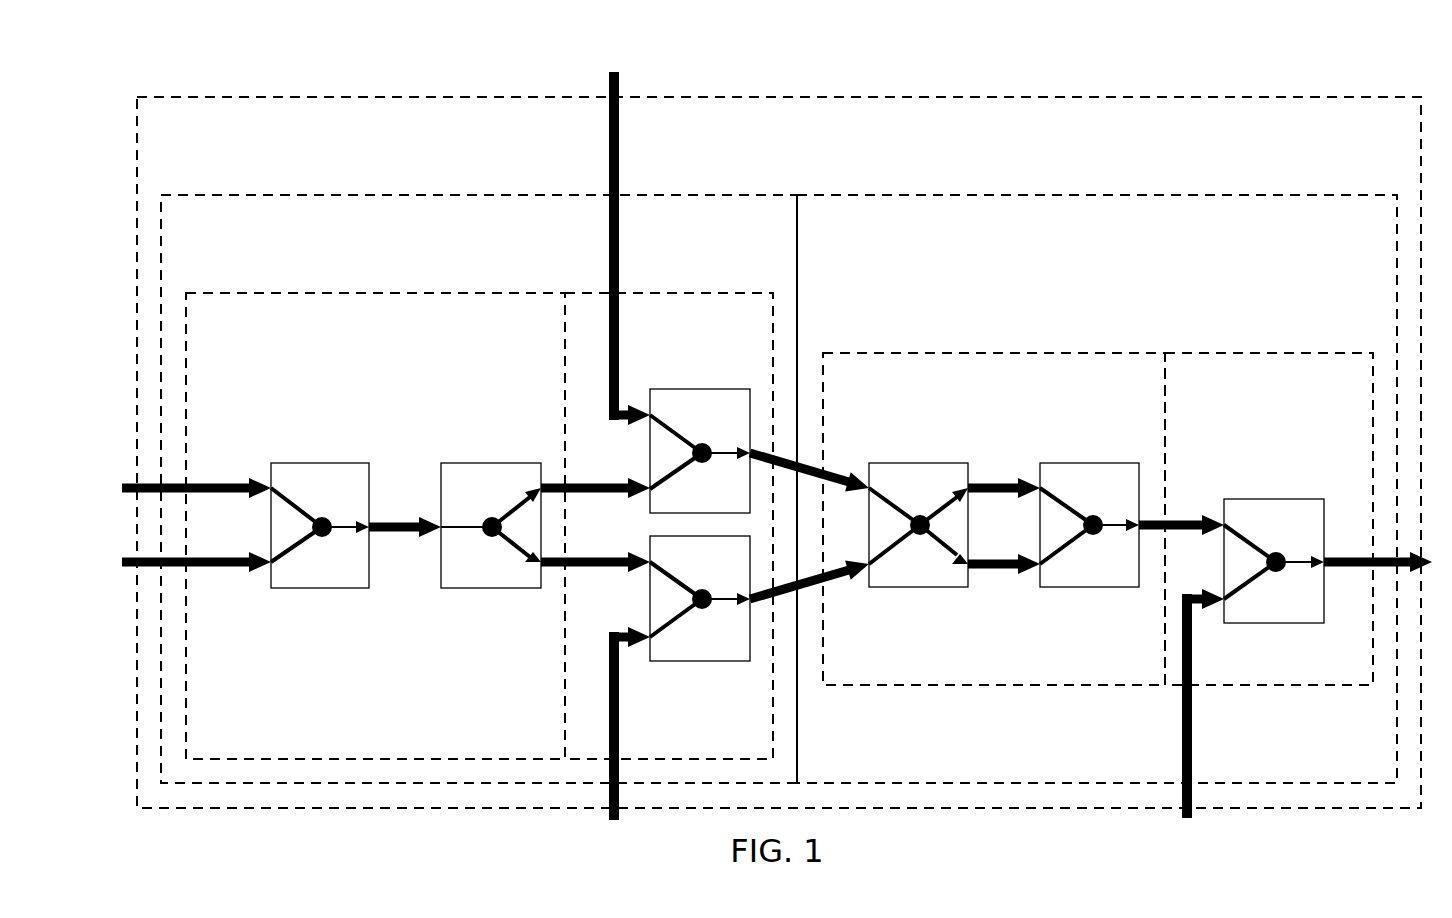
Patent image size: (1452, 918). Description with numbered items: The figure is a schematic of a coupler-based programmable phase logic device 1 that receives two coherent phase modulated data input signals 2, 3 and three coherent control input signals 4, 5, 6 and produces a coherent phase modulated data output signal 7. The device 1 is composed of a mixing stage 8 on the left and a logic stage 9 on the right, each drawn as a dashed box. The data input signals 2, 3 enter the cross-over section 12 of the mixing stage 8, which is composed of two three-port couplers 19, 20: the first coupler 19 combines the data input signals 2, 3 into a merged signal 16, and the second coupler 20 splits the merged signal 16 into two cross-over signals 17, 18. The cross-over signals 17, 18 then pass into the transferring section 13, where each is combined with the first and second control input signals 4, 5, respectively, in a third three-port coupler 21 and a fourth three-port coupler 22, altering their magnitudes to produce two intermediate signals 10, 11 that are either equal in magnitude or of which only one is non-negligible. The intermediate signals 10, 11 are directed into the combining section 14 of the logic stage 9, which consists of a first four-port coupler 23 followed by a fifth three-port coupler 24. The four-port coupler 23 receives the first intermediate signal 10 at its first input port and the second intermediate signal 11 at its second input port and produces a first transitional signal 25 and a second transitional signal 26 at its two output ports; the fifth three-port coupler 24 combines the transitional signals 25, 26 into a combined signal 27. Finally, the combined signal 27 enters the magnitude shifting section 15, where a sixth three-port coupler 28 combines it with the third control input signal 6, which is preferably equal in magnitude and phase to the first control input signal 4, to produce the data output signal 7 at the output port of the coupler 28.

The coupler-based programmable phase logic device 1 is at (725, 97).
The first data input signal 2 is at (234, 482).
The second data input signal 3 is at (234, 568).
The first control input signal 4 is at (618, 353).
The second control input signal 5 is at (618, 697).
The third control input signal 6 is at (1192, 658).
The data output signal 7 is at (1346, 552).
The mixing stage 8 is at (442, 195).
The logic stage 9 is at (1128, 195).
The first intermediate signal 10 is at (836, 470).
The second intermediate signal 11 is at (835, 575).
The cross-over section 12 is at (368, 293).
The transferring section 13 is at (663, 293).
The combining section 14 is at (993, 353).
The magnitude shifting section 15 is at (1275, 353).
The merged signal 16 is at (404, 520).
The first cross-over signal 17 is at (611, 482).
The second cross-over signal 18 is at (611, 565).
The first 3-port coupler 19 is at (321, 463).
The second 3-port coupler 20 is at (478, 463).
The third 3-port coupler 21 is at (725, 388).
The fourth 3-port coupler 22 is at (723, 661).
The first 4-port coupler 23 is at (918, 463).
The fifth 3-port coupler 24 is at (1103, 463).
The first transitional signal 25 is at (991, 480).
The second transitional signal 26 is at (991, 567).
The combined signal 27 is at (1188, 515).
The sixth 3-port coupler 28 is at (1274, 499).